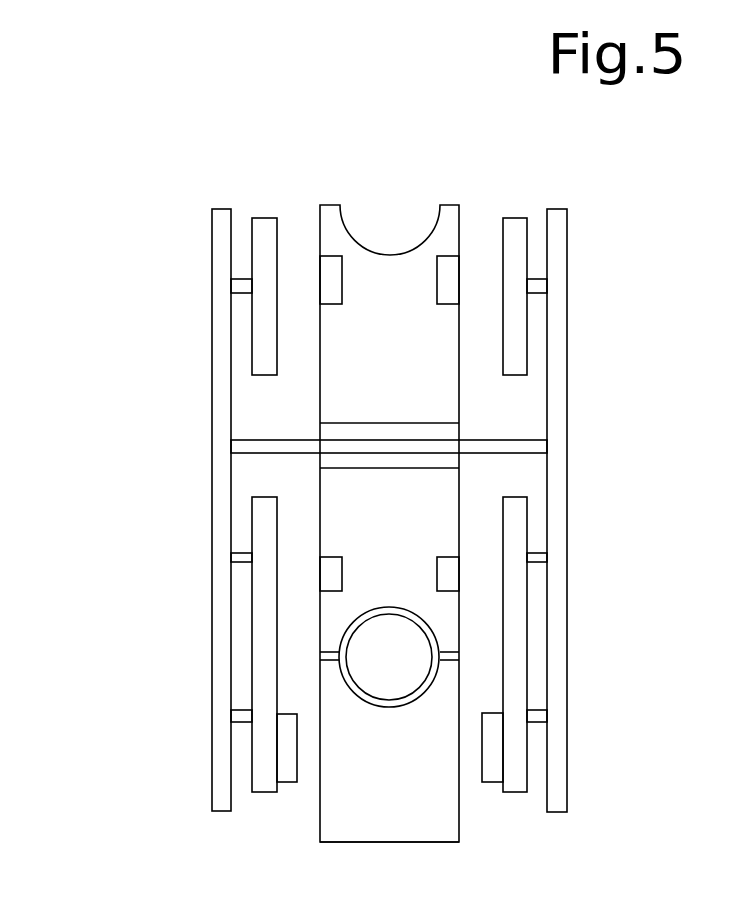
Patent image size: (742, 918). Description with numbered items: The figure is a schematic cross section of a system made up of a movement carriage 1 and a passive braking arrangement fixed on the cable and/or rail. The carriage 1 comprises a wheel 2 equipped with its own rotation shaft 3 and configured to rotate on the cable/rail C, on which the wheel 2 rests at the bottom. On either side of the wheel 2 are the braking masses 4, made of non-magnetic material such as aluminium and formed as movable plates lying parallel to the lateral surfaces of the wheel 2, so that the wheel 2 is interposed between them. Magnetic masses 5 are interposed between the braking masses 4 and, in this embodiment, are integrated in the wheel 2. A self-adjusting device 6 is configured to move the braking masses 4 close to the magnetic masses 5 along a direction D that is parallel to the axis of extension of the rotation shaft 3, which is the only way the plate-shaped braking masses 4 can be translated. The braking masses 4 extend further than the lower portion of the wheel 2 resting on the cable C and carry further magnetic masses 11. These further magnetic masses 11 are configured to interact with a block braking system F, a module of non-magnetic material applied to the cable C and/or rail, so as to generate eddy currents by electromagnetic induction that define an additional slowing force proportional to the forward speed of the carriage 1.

The movement carriage 1 is at (178, 365).
The wheel 2 is at (400, 263).
The rotation shaft 3 is at (322, 433).
The braking masses 4 is at (262, 231).
The magnetic masses 5 is at (330, 272).
The self-adjusting device 6 is at (457, 430).
The further magnetic masses 11 is at (283, 737).
The cable/rail C is at (403, 648).
The direction D is at (290, 190).
The block braking system F is at (375, 818).